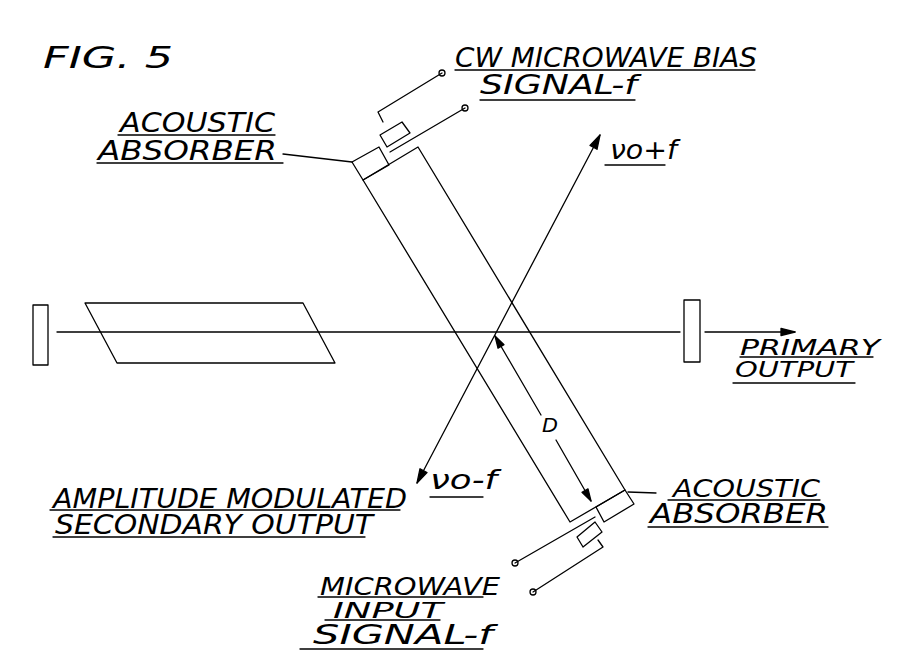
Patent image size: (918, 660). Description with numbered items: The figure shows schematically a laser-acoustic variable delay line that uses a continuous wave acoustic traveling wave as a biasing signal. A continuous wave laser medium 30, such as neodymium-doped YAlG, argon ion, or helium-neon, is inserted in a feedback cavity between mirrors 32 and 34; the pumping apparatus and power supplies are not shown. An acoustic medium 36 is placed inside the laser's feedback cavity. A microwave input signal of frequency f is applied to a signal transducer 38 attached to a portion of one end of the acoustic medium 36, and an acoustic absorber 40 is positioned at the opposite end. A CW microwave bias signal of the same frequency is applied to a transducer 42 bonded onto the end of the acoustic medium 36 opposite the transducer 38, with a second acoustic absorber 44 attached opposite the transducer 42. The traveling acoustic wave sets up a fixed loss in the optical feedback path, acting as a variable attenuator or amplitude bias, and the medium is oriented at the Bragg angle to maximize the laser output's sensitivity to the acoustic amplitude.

The continuous wave laser medium 30 is at (213, 303).
The mirror 32 is at (42, 310).
The mirror 34 is at (697, 302).
The acoustic medium 36 is at (594, 438).
The transducer 38 is at (597, 545).
The acoustic absorber 40 is at (368, 147).
The transducer 42 is at (407, 128).
The second acoustic absorber 44 is at (616, 510).